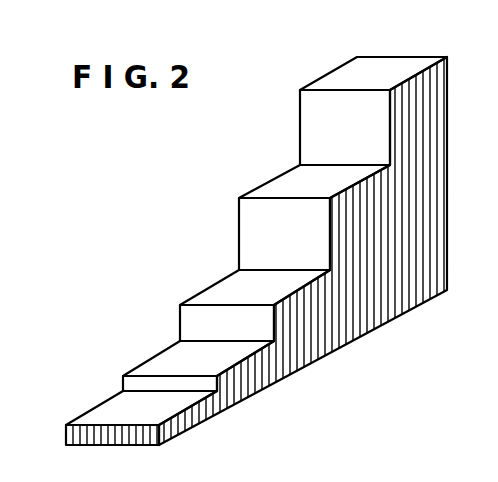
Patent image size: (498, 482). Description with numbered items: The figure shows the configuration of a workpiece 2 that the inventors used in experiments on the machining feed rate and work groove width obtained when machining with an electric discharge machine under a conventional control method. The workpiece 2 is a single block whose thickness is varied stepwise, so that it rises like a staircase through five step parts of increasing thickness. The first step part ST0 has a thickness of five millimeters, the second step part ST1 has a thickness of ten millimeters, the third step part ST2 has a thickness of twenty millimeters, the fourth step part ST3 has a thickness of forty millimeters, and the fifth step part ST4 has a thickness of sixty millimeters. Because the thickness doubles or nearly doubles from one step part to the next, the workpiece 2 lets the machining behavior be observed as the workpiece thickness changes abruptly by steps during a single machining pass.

The workpiece 2 is at (238, 234).
The first step part ST0 is at (87, 417).
The second step part ST1 is at (138, 364).
The third step part ST2 is at (189, 298).
The fourth step part ST3 is at (251, 192).
The fifth step part ST4 is at (319, 77).